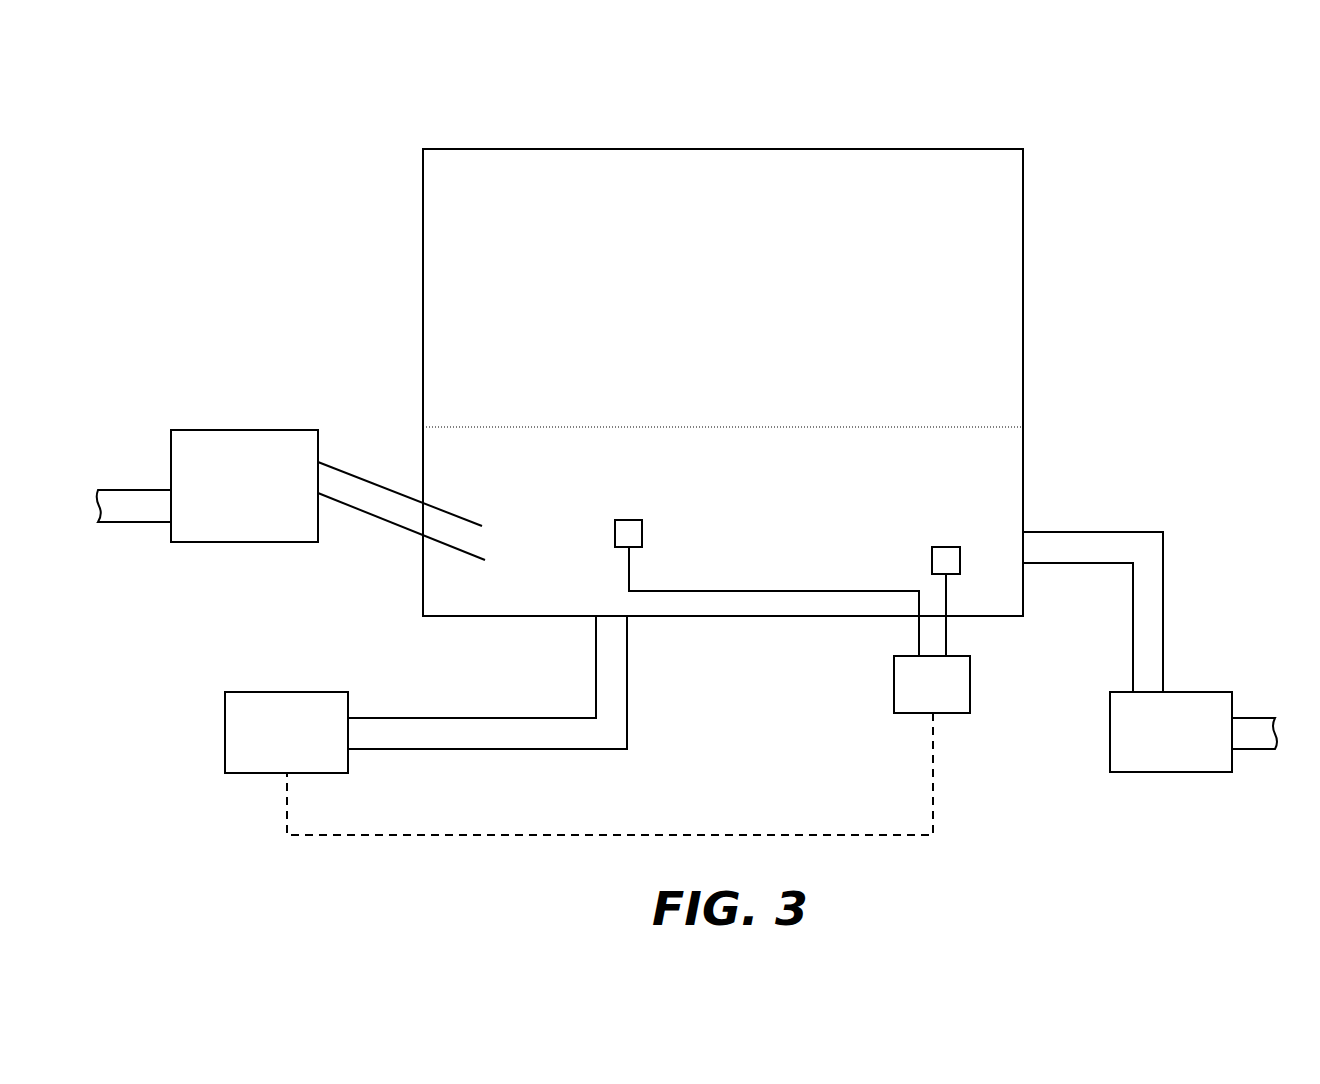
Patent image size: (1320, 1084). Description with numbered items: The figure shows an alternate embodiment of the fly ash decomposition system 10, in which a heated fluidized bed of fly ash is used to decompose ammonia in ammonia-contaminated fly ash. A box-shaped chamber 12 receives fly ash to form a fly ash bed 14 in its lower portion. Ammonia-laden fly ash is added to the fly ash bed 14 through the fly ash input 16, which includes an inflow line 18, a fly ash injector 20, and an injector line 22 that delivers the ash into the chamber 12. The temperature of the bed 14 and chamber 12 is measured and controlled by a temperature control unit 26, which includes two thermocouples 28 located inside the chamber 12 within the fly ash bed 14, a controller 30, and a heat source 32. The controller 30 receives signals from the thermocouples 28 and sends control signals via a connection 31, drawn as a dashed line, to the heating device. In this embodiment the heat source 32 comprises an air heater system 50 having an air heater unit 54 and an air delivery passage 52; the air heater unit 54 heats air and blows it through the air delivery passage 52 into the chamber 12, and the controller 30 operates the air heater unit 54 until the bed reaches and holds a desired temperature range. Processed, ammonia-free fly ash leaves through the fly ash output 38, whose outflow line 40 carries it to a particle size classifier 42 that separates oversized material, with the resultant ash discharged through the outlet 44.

The system 10 is at (214, 154).
The chamber 12 is at (423, 267).
The fly ash bed 14 is at (475, 435).
The fly ash input 16 is at (177, 353).
The inflow line 18 is at (130, 490).
The fly ash injector 20 is at (254, 430).
The injector line 22 is at (357, 474).
The temperature control unit 26 is at (843, 717).
The thermocouples 28 is at (630, 520).
The controller 30 is at (894, 685).
The connection 31 is at (935, 742).
The heat source 32 is at (184, 731).
The fly ash output 38 is at (1277, 599).
The outflow line 40 is at (1088, 532).
The particle size classifier 42 is at (1110, 740).
The outlet 44 is at (1252, 749).
The air heater system 50 is at (272, 676).
The air delivery passage 52 is at (596, 675).
The air heater unit 54 is at (322, 692).